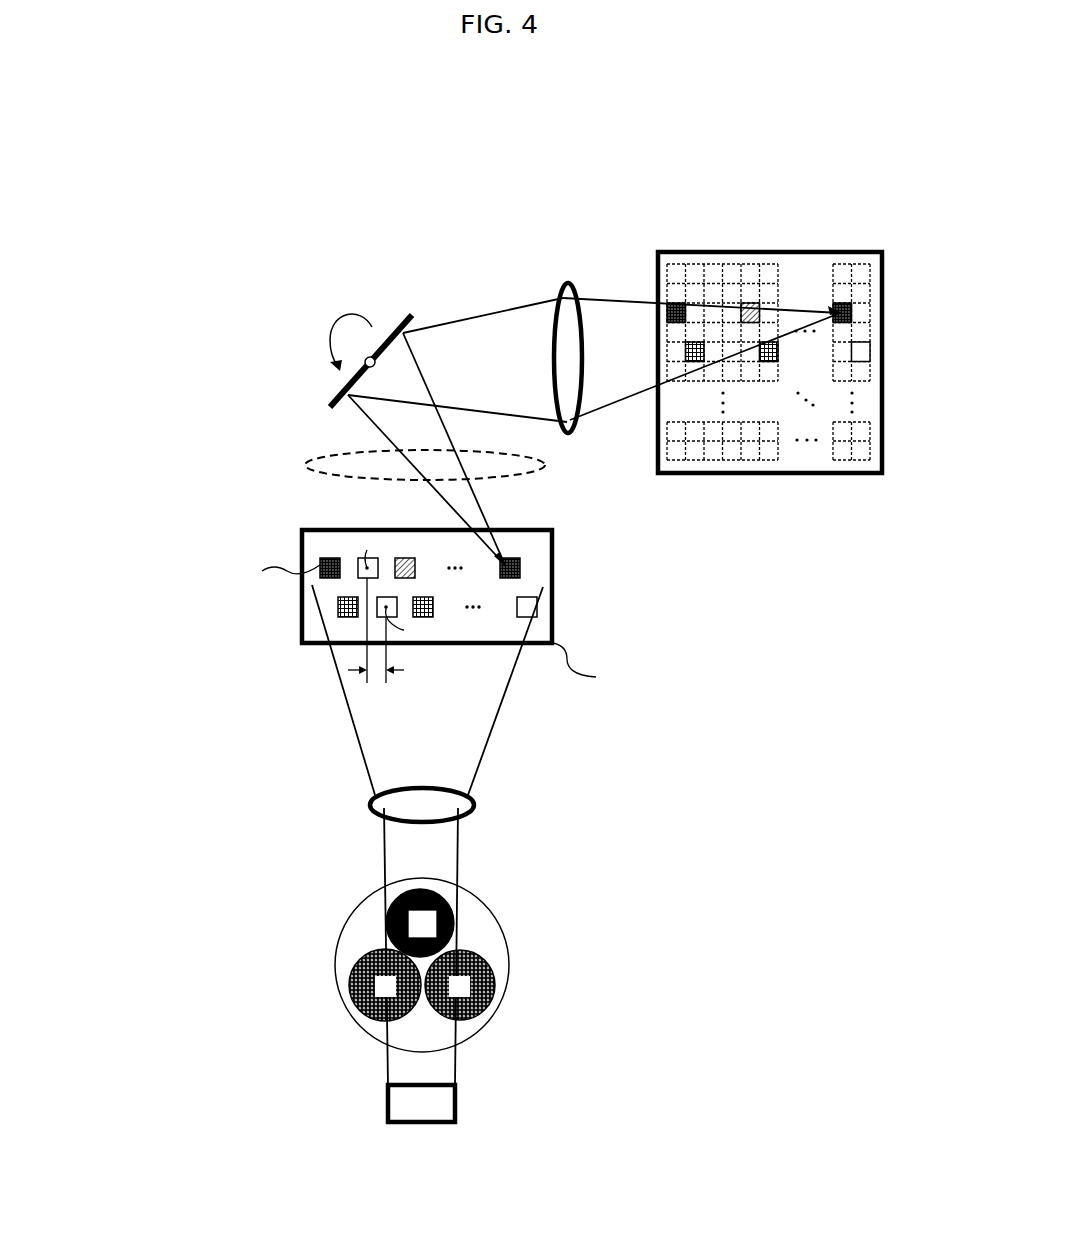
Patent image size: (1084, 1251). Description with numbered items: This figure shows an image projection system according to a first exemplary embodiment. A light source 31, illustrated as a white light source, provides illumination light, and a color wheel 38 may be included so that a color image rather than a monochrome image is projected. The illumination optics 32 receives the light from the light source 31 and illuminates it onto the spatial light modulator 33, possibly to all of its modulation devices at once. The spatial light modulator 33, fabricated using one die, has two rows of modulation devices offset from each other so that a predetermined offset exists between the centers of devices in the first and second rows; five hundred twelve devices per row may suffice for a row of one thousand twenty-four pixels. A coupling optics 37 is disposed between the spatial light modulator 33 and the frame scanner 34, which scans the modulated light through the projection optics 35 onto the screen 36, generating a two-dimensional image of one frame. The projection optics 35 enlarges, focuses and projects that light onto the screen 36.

The light source 31 is at (455, 1107).
The illumination optics 32 is at (474, 800).
The Spatial Light Modulator (SLM) 33 is at (563, 590).
The frame scanner 34 is at (334, 323).
The projection optics 35 is at (565, 283).
The screen 36 is at (767, 250).
The coupling optics 37 is at (308, 465).
The color wheel 38 is at (509, 965).